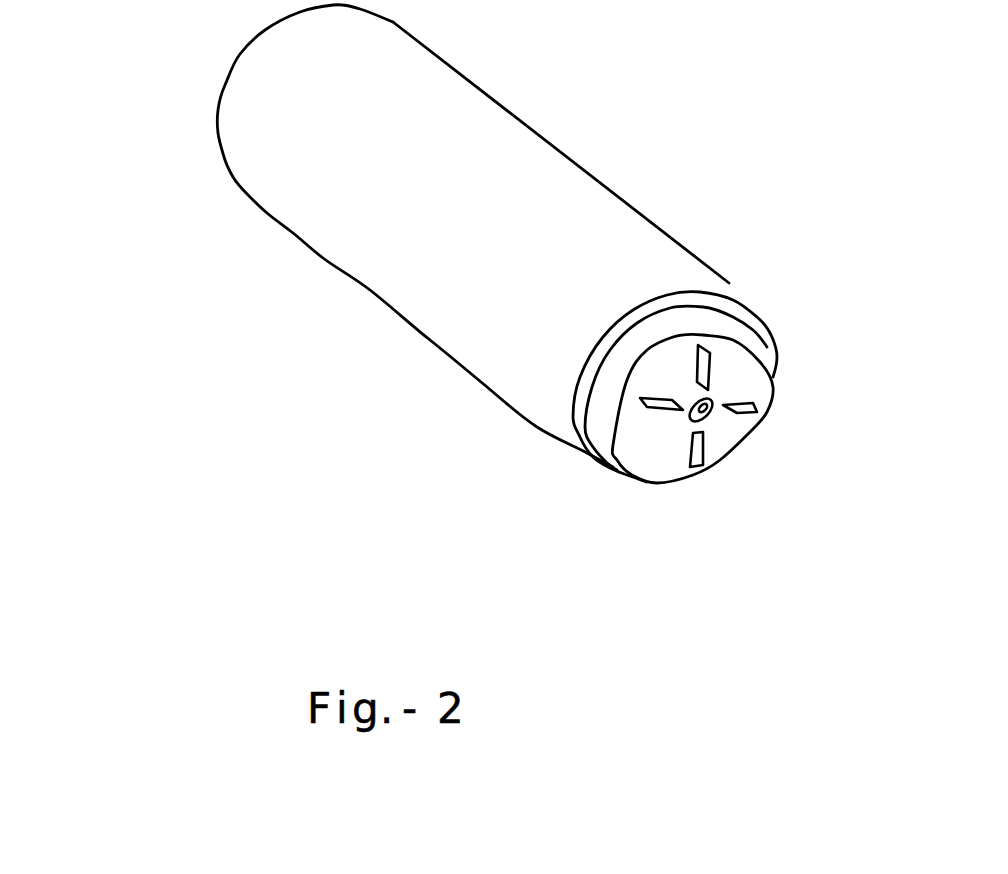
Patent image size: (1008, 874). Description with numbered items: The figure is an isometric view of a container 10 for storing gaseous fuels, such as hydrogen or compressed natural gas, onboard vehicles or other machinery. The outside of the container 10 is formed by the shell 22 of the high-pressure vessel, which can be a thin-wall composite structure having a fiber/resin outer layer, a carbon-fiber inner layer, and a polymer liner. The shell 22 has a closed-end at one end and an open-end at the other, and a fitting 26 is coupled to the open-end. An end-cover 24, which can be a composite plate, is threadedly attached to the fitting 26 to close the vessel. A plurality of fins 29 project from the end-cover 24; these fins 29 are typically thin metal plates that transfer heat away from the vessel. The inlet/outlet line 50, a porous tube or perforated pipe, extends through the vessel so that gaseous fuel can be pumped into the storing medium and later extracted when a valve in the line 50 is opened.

The container 10 is at (199, 273).
The shell 22 is at (700, 292).
The end-cover 24 is at (660, 455).
The fitting 26 is at (730, 312).
The fins 29 is at (712, 370).
The inlet/outlet line 50 is at (708, 415).